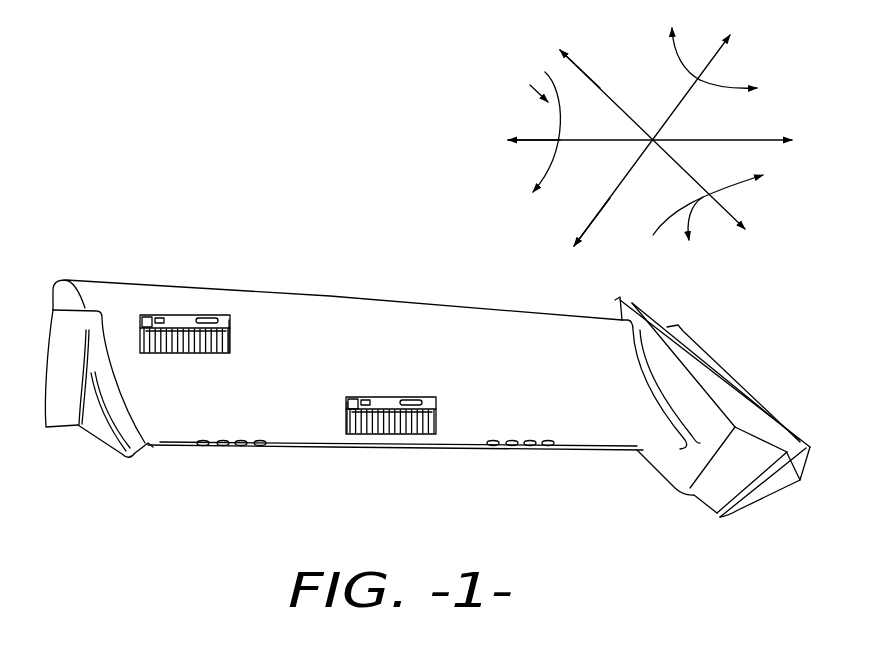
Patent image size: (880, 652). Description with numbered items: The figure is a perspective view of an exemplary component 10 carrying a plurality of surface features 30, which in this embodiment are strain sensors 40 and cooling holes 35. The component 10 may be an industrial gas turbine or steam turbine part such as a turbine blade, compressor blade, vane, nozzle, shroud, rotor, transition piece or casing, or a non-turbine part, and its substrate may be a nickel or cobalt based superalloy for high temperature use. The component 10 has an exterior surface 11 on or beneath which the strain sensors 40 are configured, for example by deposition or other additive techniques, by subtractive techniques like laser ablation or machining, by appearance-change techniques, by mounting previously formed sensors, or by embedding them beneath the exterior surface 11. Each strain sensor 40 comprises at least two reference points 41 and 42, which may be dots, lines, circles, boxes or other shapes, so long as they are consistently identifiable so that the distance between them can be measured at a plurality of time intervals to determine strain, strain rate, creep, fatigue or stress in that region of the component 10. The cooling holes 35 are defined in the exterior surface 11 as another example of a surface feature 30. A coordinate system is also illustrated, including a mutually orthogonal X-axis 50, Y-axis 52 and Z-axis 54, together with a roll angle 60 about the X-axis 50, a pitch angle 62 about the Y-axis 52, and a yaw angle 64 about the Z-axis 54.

The component 10 is at (125, 238).
The exterior surface 11 is at (363, 320).
The surface features 30 is at (247, 322).
The cooling holes 35 is at (203, 451).
The strain sensors 40 is at (178, 320).
The reference point 41 is at (173, 347).
The reference point 42 is at (230, 340).
The X-axis 50 is at (683, 173).
The Y-axis 52 is at (618, 144).
The Z-axis 54 is at (672, 115).
The roll angle 60 is at (700, 222).
The pitch angle 62 is at (536, 120).
The yaw angle 64 is at (708, 92).